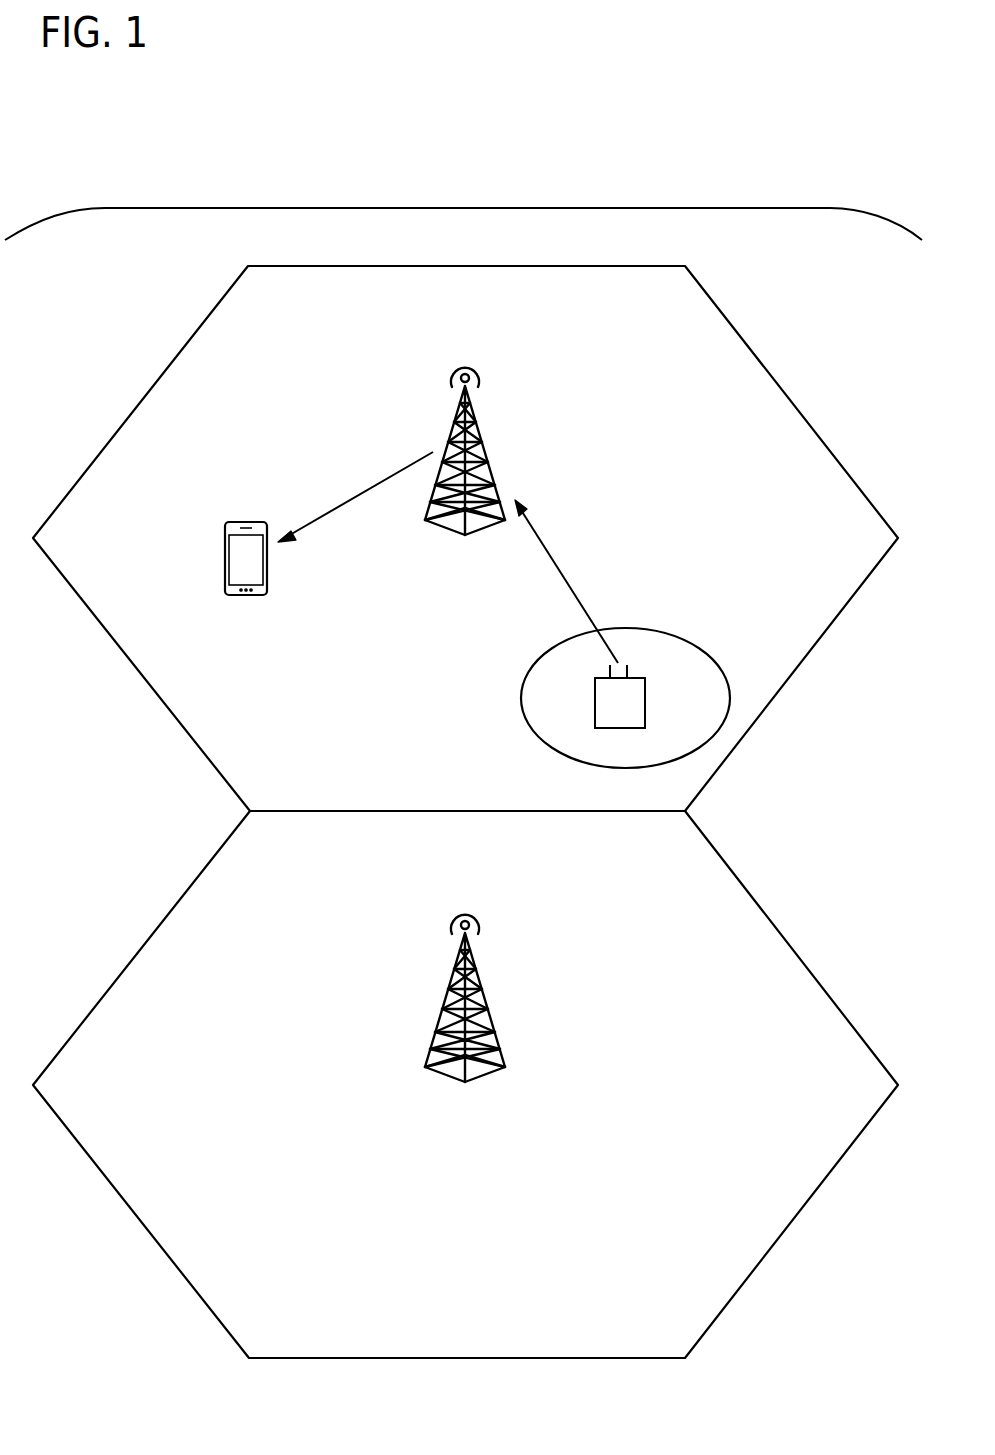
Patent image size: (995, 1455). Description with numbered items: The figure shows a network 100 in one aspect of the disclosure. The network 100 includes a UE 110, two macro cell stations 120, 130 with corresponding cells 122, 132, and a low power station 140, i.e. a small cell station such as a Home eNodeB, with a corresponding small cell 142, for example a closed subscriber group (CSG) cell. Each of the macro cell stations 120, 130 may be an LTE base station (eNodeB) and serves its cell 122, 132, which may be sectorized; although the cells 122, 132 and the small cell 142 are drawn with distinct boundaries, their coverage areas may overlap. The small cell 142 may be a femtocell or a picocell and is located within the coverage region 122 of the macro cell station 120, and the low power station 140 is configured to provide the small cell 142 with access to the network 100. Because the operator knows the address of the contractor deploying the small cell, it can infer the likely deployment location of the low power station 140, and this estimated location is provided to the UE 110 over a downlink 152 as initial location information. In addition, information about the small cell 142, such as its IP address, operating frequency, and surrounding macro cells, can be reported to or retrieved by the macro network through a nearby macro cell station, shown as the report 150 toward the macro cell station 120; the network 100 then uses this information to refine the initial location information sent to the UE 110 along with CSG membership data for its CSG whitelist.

The network 100 is at (464, 208).
The UE 110 is at (246, 570).
The macro cell station 120 is at (465, 466).
The cell 122 is at (193, 337).
The macro cell station 130 is at (465, 1014).
The cell 132 is at (157, 930).
The low power station 140 is at (620, 696).
The small cell 142 is at (706, 660).
The report to nearby macro cell station 150 is at (566, 581).
The downlink 152 is at (355, 497).